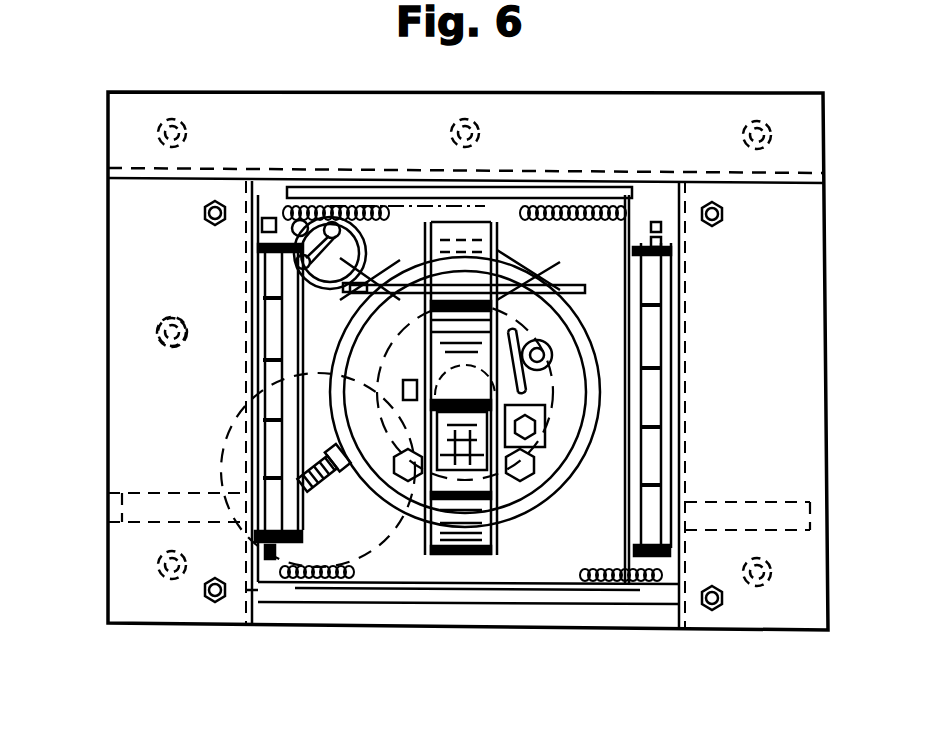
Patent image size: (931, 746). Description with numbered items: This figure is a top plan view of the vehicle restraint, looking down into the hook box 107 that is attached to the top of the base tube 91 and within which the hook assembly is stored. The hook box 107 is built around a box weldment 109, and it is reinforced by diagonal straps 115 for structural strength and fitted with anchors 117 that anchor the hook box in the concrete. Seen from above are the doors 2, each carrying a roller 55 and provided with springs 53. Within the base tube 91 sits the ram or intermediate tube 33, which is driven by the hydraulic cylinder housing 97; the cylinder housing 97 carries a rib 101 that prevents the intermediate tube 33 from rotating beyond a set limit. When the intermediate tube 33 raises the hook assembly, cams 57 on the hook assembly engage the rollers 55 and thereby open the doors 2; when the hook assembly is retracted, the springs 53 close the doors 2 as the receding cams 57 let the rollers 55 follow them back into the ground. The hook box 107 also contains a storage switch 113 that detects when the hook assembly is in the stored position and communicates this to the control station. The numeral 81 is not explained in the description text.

The doors 2 is at (250, 268).
The ram or intermediate tube 33 is at (558, 468).
The springs 53 is at (628, 212).
The roller 55 is at (637, 342).
The cams 57 is at (545, 298).
The nut 81 is at (400, 480).
The base tube 91 is at (540, 500).
The hydraulic cylinder housing 97 is at (465, 384).
The rib 101 is at (465, 556).
The hook box 107 is at (95, 411).
The box weldment 109 is at (247, 593).
The storage switch 113 is at (350, 478).
The diagonal straps 115 is at (140, 505).
The anchors 117 is at (168, 347).